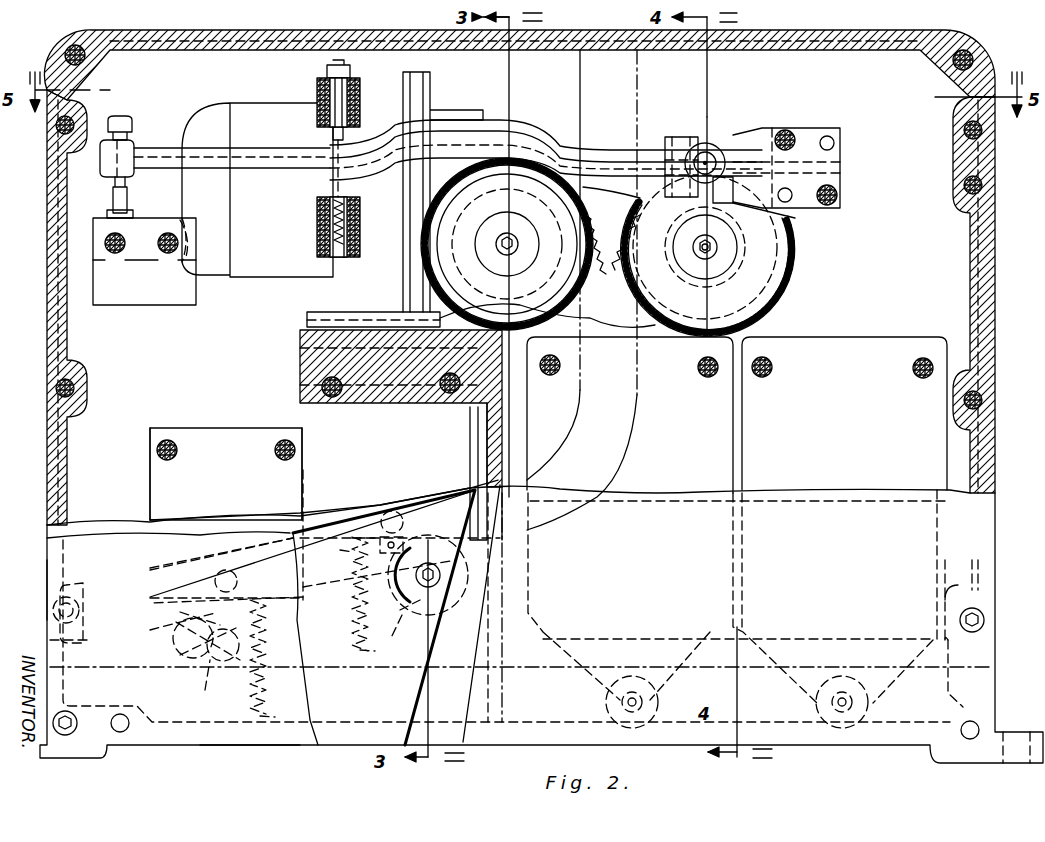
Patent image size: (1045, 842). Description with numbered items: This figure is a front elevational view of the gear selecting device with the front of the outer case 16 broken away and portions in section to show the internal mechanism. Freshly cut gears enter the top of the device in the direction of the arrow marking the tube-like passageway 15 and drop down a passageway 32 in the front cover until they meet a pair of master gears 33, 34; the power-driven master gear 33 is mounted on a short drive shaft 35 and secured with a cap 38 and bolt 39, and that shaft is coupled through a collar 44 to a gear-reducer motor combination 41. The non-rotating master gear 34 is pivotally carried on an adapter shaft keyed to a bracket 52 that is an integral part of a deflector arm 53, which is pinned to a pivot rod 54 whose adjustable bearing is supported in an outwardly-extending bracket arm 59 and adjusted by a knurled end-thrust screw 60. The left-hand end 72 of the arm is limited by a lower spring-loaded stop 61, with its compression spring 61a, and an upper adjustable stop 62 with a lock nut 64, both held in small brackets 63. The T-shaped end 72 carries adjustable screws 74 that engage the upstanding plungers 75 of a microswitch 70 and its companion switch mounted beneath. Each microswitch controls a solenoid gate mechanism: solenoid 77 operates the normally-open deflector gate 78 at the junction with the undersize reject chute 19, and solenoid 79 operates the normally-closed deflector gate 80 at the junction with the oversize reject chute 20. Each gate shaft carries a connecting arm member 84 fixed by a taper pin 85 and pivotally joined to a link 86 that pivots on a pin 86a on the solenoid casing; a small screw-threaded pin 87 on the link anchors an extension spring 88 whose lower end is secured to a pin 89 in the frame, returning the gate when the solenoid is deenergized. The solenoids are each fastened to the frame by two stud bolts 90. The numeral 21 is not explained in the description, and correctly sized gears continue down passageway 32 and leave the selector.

The tube-like passageway 15 is at (608, 66).
The housing 16 is at (874, 55).
The undersize reject chute 19 is at (455, 745).
The oversize reject chute 20 is at (235, 746).
The side wall 21 is at (47, 603).
The passageway 32 is at (618, 98).
The power-driven master gear 33 is at (577, 226).
The movable master gear 34 is at (626, 255).
The drive shaft 35 is at (585, 318).
The cap 38 is at (512, 278).
The bolt 39 is at (512, 232).
The gear-reducer motor combination 41 is at (263, 283).
The collar 44 is at (306, 320).
The bracket 52 is at (688, 232).
The deflector arm 53 is at (520, 113).
The pivot rod 54 is at (706, 142).
The bracket arm 59 is at (843, 152).
The end-thrust screw 60 is at (720, 150).
The spring-loaded stop 61 is at (332, 194).
The compression spring 61a is at (335, 226).
The adjustable stop 62 is at (333, 139).
The bracket 63 is at (317, 100).
The lock nut 64 is at (322, 74).
The microswitch 70 is at (160, 287).
The left-hand end 72 is at (146, 150).
The adjustable screw 74 is at (122, 118).
The plunger 75 is at (114, 206).
The solenoid 77 is at (407, 458).
The deflector gate 78 is at (445, 514).
The solenoid 79 is at (226, 484).
The deflector gate 80 is at (195, 612).
The connecting arm member 84 is at (392, 618).
The taper pin 85 is at (444, 595).
The link 86 is at (380, 512).
The pin 86a is at (438, 500).
The screw-threaded pin 87 is at (340, 512).
The extension spring 88 is at (352, 544).
The pin 89 is at (376, 650).
The stud bolt 90 is at (282, 440).